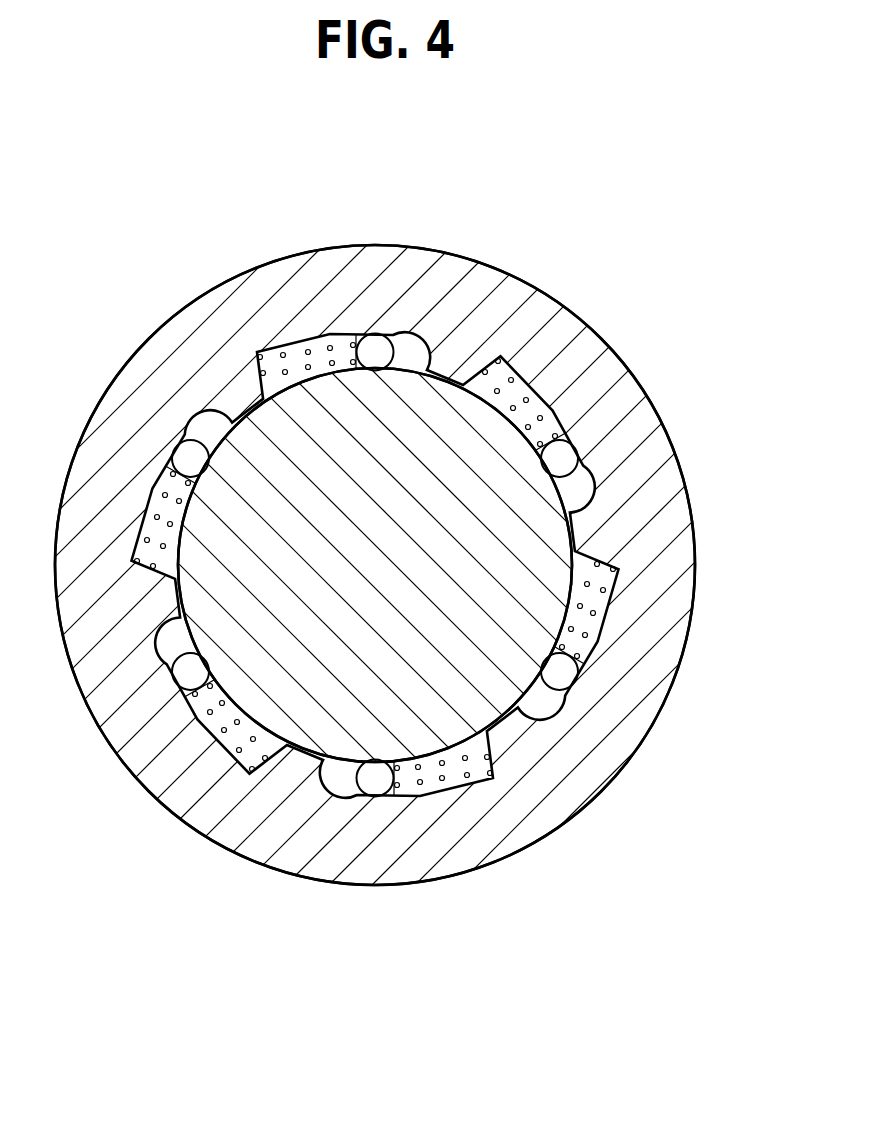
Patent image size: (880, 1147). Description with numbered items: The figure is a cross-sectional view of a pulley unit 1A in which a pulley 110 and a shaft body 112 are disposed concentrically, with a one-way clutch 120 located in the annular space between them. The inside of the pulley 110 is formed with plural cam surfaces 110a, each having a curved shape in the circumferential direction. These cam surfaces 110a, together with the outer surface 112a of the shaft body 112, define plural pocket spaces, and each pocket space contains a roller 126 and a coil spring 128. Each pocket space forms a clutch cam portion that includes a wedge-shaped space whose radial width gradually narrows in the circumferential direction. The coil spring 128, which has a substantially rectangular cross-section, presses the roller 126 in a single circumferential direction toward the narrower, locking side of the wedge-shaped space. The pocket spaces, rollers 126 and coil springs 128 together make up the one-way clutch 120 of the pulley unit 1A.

The pulley unit 1A is at (642, 228).
The pulley 110 is at (622, 397).
The cam surfaces 110a is at (561, 702).
The shaft body 112 is at (540, 548).
The outer surface 112a is at (566, 681).
The one-way clutch 120 is at (575, 708).
The roller 126 is at (572, 683).
The coil spring 128 is at (577, 608).